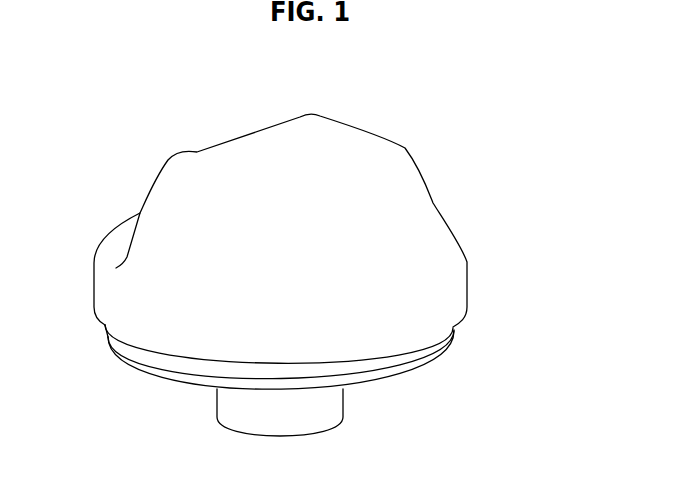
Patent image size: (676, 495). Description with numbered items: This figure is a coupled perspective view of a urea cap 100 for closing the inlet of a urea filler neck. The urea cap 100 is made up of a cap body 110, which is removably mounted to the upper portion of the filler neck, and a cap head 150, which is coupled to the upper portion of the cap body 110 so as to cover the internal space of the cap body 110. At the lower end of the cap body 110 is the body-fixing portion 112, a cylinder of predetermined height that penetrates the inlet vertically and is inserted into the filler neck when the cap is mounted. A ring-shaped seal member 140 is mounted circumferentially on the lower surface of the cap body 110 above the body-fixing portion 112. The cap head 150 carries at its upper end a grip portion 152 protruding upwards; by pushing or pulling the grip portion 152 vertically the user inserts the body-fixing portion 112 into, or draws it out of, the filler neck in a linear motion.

The urea cap 100 is at (85, 93).
The cap body 110 is at (468, 328).
The body-fixing portion 112 is at (343, 418).
The seal member 140 is at (360, 382).
The cap head 150 is at (435, 201).
The grip portion 152 is at (200, 160).